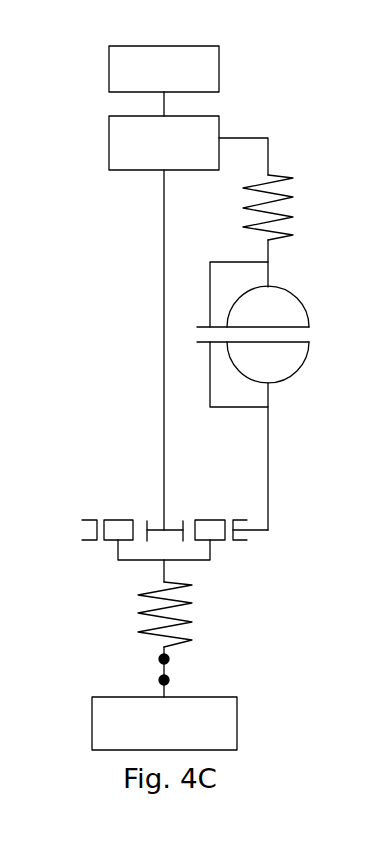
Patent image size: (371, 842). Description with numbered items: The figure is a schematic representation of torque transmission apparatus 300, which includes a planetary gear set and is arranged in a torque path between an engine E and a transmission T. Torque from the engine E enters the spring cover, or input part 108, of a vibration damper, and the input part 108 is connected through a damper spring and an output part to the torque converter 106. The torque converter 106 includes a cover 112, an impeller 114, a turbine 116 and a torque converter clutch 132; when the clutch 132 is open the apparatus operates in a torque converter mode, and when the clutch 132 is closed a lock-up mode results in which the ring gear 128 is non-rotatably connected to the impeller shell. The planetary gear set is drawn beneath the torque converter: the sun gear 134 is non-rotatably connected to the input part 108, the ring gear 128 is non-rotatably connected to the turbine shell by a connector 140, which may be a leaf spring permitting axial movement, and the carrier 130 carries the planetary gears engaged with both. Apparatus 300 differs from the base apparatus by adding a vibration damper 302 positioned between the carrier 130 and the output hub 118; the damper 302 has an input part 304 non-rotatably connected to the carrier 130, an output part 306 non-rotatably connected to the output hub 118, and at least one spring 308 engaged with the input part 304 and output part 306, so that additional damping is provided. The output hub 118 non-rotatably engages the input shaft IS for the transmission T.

The torque transmission apparatus 300 is at (256, 81).
The engine E is at (109, 66).
The input part (spring cover) 108 is at (109, 137).
The connector 140 is at (260, 211).
The torque converter 106 is at (310, 296).
The cover 112 is at (268, 277).
The impeller 114 is at (290, 313).
The turbine 116 is at (287, 357).
The torque converter clutch 132 is at (190, 333).
The component (sun gear) 134 is at (153, 523).
The component (planetary carrier) 130 is at (218, 540).
The component (ring gear) 128 is at (242, 540).
The input part 304 is at (164, 574).
The vibration damper 302 is at (130, 605).
The output part 306 is at (164, 647).
The spring 308 is at (192, 603).
The output hub 118 is at (169, 661).
The input shaft IS is at (169, 683).
The transmission T is at (103, 697).